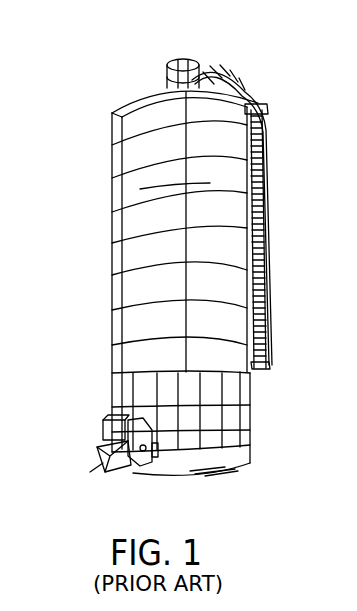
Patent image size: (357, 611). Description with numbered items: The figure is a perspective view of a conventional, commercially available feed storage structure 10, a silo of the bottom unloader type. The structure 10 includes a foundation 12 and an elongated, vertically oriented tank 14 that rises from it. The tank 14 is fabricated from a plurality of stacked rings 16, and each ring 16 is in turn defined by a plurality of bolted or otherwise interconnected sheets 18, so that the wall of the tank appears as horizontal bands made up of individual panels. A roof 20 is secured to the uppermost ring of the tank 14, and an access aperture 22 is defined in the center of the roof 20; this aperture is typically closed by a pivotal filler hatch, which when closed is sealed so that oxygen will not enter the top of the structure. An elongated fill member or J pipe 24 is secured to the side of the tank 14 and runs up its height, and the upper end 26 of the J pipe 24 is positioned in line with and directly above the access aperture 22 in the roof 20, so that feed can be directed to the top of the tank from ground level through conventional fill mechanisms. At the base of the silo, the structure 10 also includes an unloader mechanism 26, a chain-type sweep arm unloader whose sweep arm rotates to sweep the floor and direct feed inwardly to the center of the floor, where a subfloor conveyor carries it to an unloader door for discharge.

The feed storage structure 10 is at (104, 170).
The foundation 12 is at (243, 472).
The tank 14 is at (120, 264).
The rings 16 is at (226, 121).
The sheets 18 is at (165, 186).
The roof 20 is at (153, 88).
The access aperture 22 is at (183, 87).
The J pipe 24 is at (268, 206).
The unloader mechanism 26 is at (207, 72).